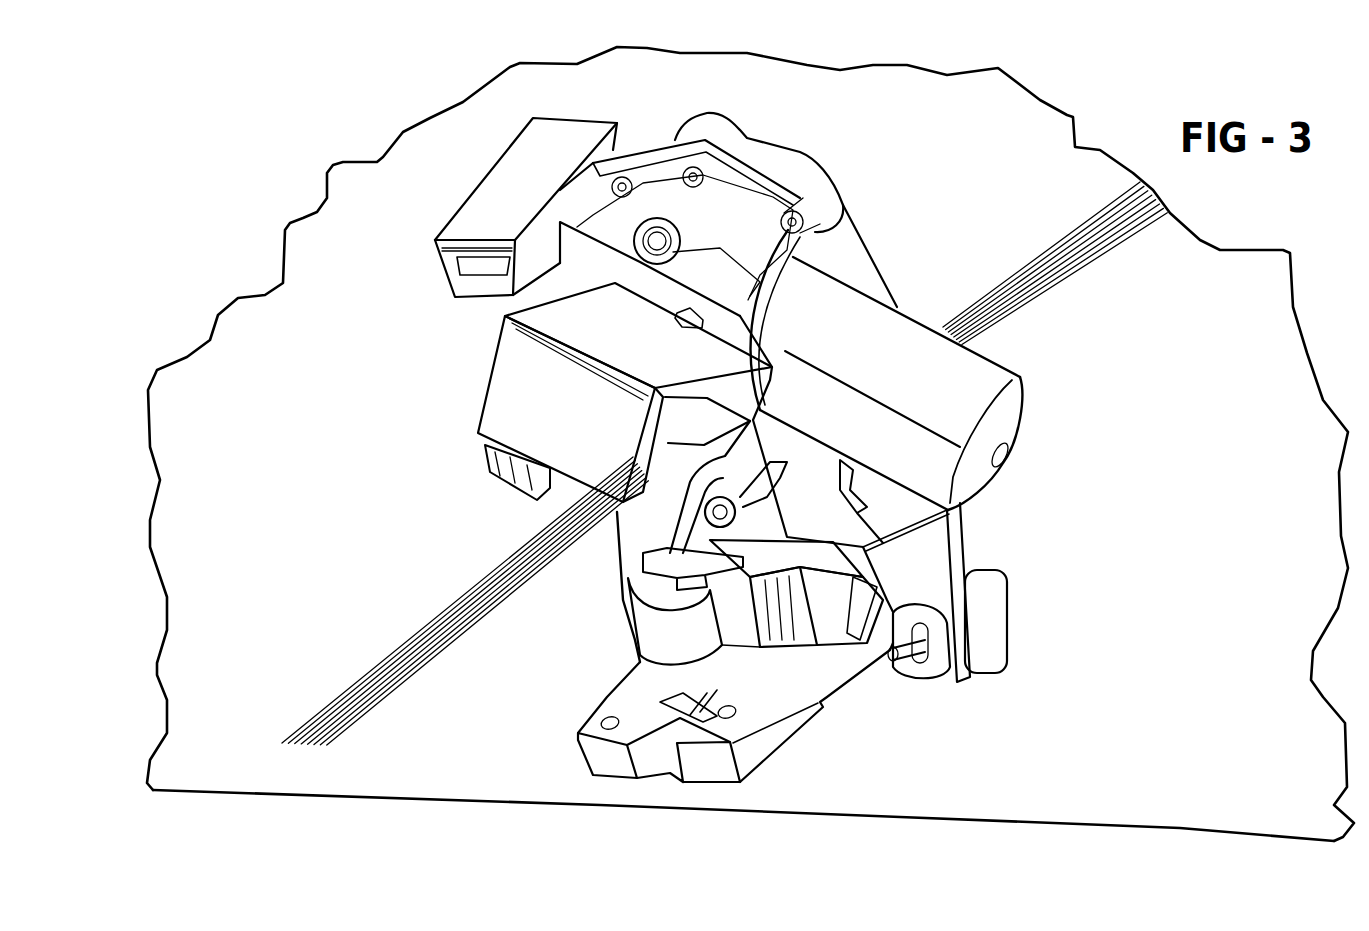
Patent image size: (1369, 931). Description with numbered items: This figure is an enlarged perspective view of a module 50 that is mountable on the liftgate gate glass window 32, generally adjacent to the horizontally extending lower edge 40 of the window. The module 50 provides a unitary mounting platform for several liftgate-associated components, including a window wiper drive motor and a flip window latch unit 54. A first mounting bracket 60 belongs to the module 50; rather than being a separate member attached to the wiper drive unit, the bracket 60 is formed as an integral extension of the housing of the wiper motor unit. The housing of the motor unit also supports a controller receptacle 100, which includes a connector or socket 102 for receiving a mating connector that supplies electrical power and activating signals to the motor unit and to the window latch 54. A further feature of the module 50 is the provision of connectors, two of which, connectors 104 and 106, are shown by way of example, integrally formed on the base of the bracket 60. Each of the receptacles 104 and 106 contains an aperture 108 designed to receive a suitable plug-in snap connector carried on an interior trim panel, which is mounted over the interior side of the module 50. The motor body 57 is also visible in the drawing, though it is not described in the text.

The liftgate gate glass window 32 is at (260, 793).
The lower edge 40 is at (197, 788).
The module 50 is at (498, 810).
The flip window latch unit 54 is at (705, 768).
The electric motor 57 is at (885, 346).
The first mounting bracket 60 is at (931, 574).
The controller receptacle 100 is at (584, 423).
The connector or socket 102 is at (500, 490).
The connector 104 is at (843, 508).
The connector 106 is at (493, 228).
The aperture 108 is at (488, 268).